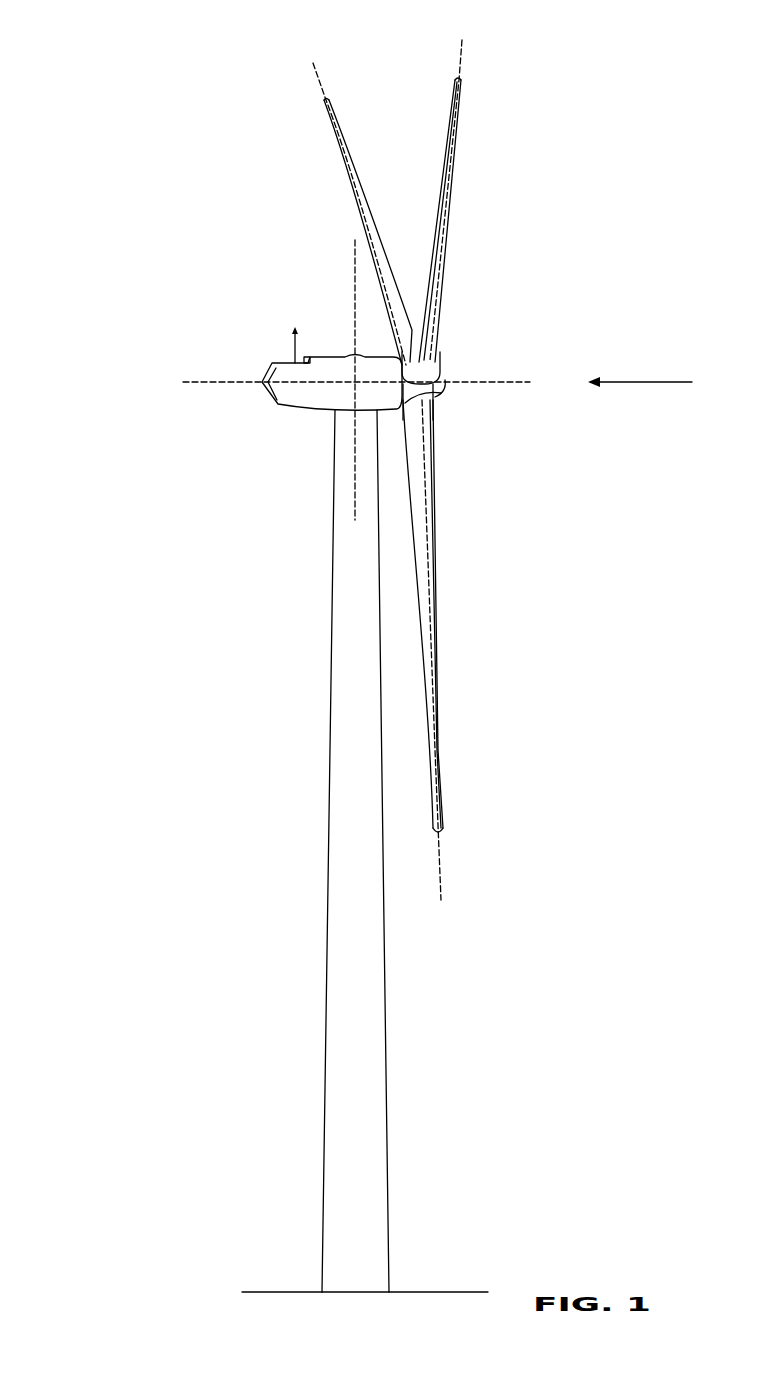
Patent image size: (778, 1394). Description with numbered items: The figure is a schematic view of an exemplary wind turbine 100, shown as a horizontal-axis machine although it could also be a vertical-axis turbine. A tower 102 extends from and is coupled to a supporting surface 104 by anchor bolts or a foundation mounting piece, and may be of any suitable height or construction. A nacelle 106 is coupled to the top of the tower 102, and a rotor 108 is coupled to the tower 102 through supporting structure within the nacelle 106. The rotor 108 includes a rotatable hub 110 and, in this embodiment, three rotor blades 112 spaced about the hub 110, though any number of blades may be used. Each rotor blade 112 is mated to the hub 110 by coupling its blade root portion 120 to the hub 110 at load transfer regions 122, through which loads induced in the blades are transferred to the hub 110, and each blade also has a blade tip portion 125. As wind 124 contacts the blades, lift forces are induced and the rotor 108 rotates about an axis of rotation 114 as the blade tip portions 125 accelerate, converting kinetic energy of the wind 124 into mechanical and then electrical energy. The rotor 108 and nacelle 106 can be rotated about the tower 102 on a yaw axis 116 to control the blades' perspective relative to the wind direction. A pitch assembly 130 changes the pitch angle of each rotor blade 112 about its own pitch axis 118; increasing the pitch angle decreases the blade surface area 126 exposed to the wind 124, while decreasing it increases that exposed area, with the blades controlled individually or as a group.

The wind turbine 100 is at (158, 45).
The tower 102 is at (324, 1050).
The supporting surface 104 is at (293, 1291).
The nacelle 106 is at (300, 410).
The rotor 108 is at (464, 403).
The rotatable hub 110 is at (443, 378).
The rotor blades 112 is at (331, 130).
The axis of rotation 114 is at (505, 383).
The yaw axis 116 is at (353, 293).
The pitch axis 118 is at (318, 78).
The blade root portion 120 is at (432, 543).
The load transfer regions 122 is at (430, 358).
The wind 124 is at (640, 382).
The blade tip portion 125 is at (324, 101).
The blade surface area 126 is at (437, 333).
The pitch assembly 130 is at (447, 430).